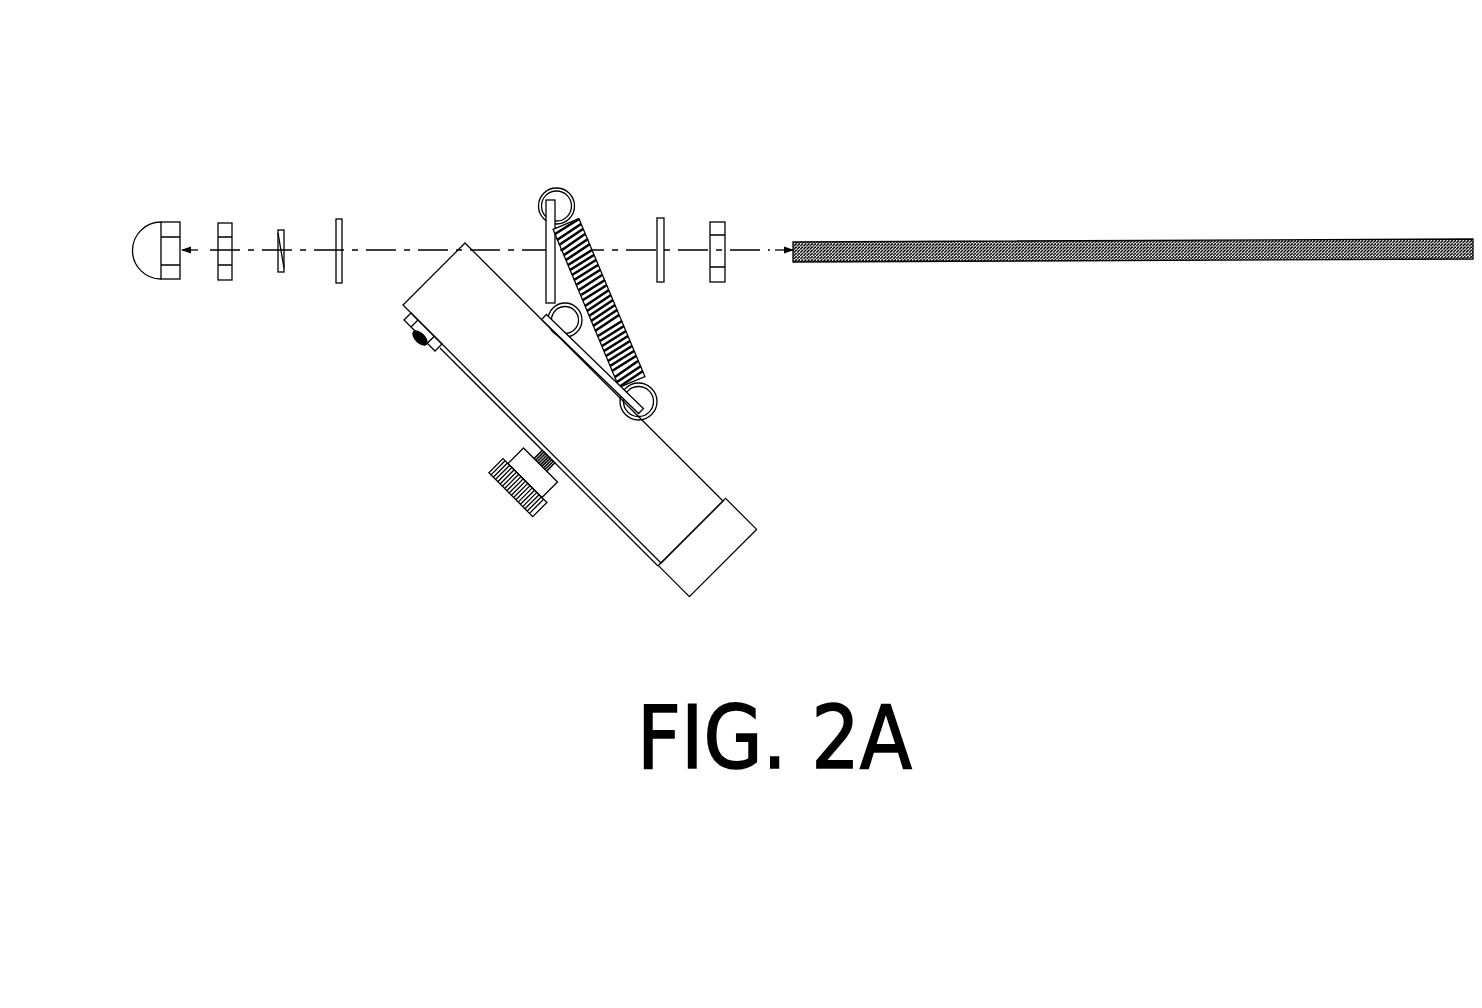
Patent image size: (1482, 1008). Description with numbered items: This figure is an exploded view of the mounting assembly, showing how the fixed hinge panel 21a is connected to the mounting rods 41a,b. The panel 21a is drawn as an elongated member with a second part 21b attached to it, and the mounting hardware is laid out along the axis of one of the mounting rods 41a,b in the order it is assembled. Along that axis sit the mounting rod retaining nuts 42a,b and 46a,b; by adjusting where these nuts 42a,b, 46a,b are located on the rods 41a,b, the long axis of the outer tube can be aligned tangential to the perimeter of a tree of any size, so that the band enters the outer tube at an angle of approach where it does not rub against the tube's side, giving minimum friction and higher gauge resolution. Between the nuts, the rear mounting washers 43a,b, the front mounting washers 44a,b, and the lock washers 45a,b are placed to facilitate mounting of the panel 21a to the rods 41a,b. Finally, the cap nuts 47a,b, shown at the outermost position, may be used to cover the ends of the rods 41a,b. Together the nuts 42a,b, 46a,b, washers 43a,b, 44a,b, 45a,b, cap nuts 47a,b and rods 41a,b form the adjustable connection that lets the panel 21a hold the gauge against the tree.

The fixed hinge panel 21a is at (546, 233).
The spring-biased arm 21b is at (583, 367).
The mounting rods 41a,b is at (1137, 263).
The mounting rod retaining nuts 42a,b is at (718, 283).
The rear mounting washers 43a,b is at (661, 283).
The front mounting washers 44a,b is at (339, 218).
The lock washers 45a,b is at (282, 273).
The mounting rod retaining nuts 46a,b is at (226, 221).
The cap nuts 47a,b is at (170, 281).